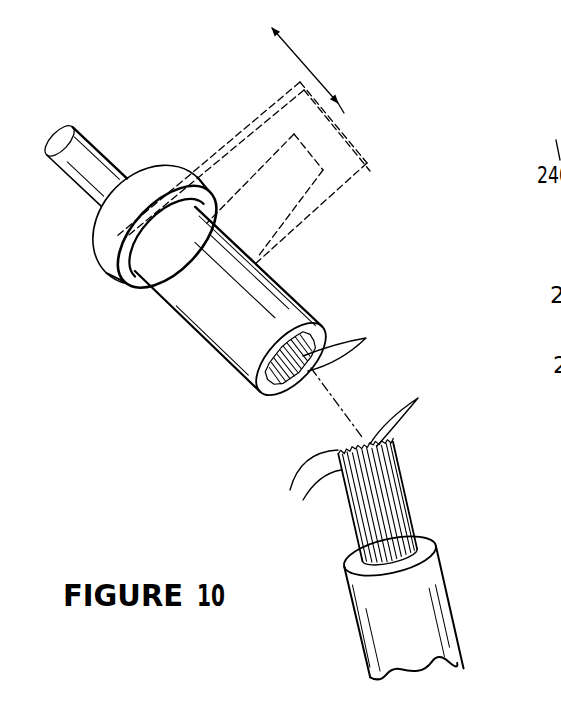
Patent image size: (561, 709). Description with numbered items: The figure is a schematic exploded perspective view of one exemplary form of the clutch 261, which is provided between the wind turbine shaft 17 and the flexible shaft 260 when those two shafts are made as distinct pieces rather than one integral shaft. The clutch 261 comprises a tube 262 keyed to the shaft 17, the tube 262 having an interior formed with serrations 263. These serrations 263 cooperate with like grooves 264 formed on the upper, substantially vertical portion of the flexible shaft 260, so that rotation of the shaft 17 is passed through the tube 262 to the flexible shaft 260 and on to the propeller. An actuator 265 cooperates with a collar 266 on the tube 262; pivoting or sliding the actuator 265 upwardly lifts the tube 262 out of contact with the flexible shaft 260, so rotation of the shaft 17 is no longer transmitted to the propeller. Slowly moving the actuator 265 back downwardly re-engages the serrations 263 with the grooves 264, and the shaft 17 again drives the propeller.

The wind turbine shaft 17 is at (90, 170).
The flexible shaft 260 is at (418, 468).
The clutch 261 is at (413, 297).
The clutch tube 262 is at (232, 292).
The clutch serrations 263 is at (323, 351).
The grooves 264 is at (367, 478).
The actuator 265 is at (350, 128).
The collar 266 is at (148, 192).